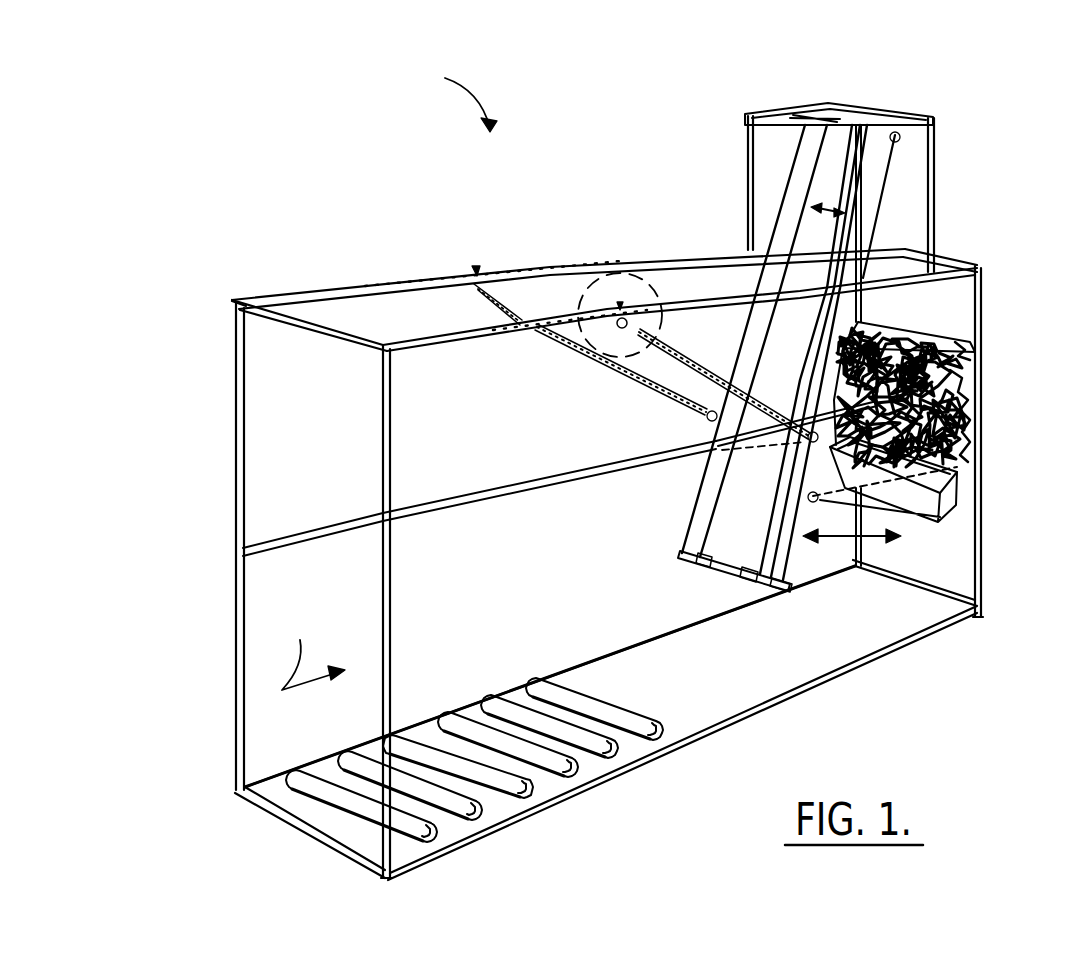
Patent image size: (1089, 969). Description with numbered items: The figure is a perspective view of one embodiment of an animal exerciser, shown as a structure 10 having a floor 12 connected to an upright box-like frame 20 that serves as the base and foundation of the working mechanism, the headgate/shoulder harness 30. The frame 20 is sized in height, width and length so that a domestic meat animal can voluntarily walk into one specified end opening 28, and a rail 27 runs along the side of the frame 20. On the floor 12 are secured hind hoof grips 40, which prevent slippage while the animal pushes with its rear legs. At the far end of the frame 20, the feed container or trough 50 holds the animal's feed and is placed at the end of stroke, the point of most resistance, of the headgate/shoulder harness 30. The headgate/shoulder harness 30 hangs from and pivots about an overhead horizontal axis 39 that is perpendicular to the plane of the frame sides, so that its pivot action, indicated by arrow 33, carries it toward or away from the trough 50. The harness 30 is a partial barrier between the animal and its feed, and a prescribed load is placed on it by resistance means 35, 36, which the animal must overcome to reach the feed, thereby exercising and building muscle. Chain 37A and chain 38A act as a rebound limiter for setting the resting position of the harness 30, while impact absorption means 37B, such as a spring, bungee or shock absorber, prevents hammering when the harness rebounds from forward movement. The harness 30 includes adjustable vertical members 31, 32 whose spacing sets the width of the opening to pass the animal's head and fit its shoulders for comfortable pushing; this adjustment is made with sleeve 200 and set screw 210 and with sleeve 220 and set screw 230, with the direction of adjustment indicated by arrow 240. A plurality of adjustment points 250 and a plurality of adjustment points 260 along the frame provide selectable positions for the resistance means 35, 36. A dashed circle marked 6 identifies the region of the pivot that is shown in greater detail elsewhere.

The structure 10 is at (451, 95).
The floor 12 is at (912, 612).
The upright box-like frame 20 is at (235, 388).
The horizontal rail 27 is at (295, 547).
The end opening 28 is at (311, 647).
The headgate/shoulder harness 30 is at (724, 404).
The adjustable vertical member 31 is at (684, 540).
The adjustable vertical member 32 is at (693, 492).
The pivot action arrow 33 is at (838, 544).
The resistance means 35 is at (703, 332).
The resistance means 36 is at (560, 355).
The chain 37A is at (935, 540).
The impact absorption means 37B is at (975, 476).
The chain 38A is at (766, 447).
The overhead horizontal axis 39 is at (932, 116).
The hind hoof grips 40 is at (510, 786).
The feed container or trough 50 is at (975, 382).
The sleeve 200 is at (768, 588).
The set screw 210 is at (753, 577).
The sleeve 220 is at (690, 560).
The set screw 230 is at (724, 572).
The arrow 240 is at (812, 207).
The plurality of adjustment points 250 is at (517, 330).
The plurality of adjustment points 260 is at (445, 283).
The detail area of FIG. 6 is at (578, 273).